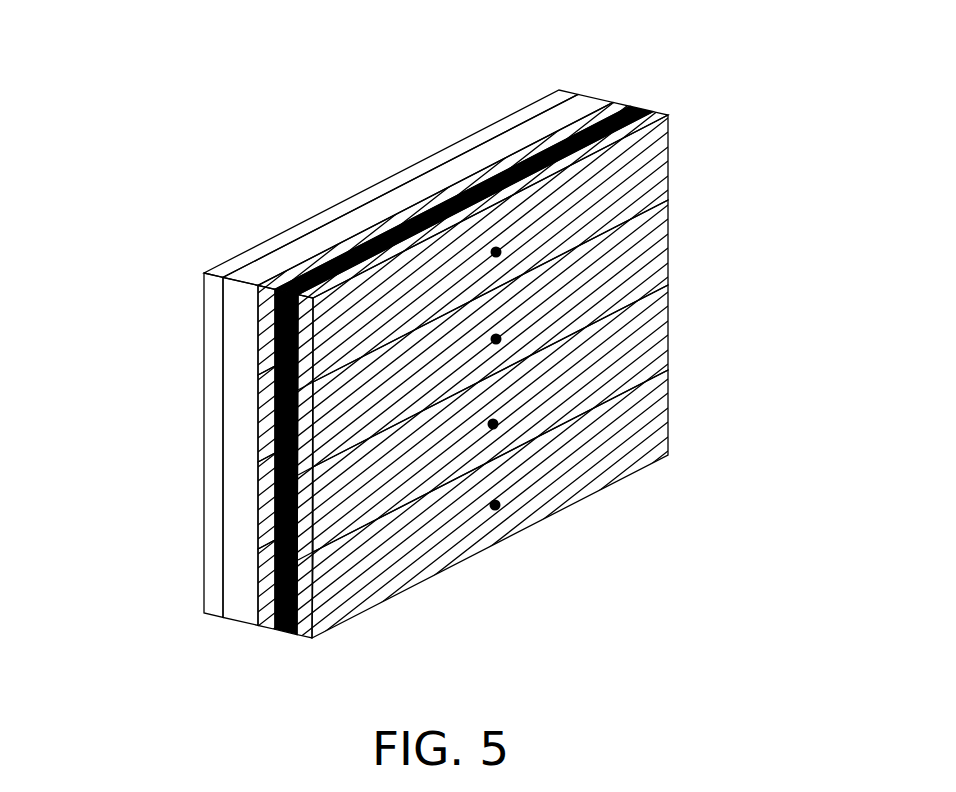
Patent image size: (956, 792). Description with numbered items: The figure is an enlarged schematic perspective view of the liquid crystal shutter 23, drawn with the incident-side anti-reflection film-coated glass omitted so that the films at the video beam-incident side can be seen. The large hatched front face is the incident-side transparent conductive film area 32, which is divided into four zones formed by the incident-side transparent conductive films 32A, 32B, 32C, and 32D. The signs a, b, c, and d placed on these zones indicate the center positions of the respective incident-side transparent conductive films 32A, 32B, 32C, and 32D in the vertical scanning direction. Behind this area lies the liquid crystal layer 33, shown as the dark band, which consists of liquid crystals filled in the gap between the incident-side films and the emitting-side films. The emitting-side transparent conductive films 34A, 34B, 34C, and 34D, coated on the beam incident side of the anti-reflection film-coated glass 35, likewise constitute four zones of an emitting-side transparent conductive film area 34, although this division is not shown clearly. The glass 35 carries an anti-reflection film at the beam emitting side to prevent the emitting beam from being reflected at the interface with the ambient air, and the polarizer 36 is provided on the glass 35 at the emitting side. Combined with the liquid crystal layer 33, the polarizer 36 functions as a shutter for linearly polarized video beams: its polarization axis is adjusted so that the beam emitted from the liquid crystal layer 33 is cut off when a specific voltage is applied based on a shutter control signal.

The liquid crystal shutter 23 is at (333, 92).
The incident-side transparent conductive film area 32 is at (553, 396).
The incident-side transparent conductive film 32A is at (657, 172).
The incident-side transparent conductive film 32B is at (657, 250).
The incident-side transparent conductive film 32C is at (657, 343).
The incident-side transparent conductive film 32D is at (547, 504).
The liquid crystal layer 33 is at (641, 110).
The emitting-side transparent conductive film area 34 is at (350, 396).
The emitting-side transparent conductive film 34A is at (275, 344).
The emitting-side transparent conductive film 34B is at (275, 418).
The emitting-side transparent conductive film 34C is at (275, 510).
The emitting-side transparent conductive film 34D is at (186, 584).
The anti-reflection film-coated glass 35 is at (595, 98).
The polarizer 36 is at (564, 92).
The center position a is at (507, 243).
The center position b is at (507, 330).
The center position c is at (504, 415).
The center position d is at (506, 496).